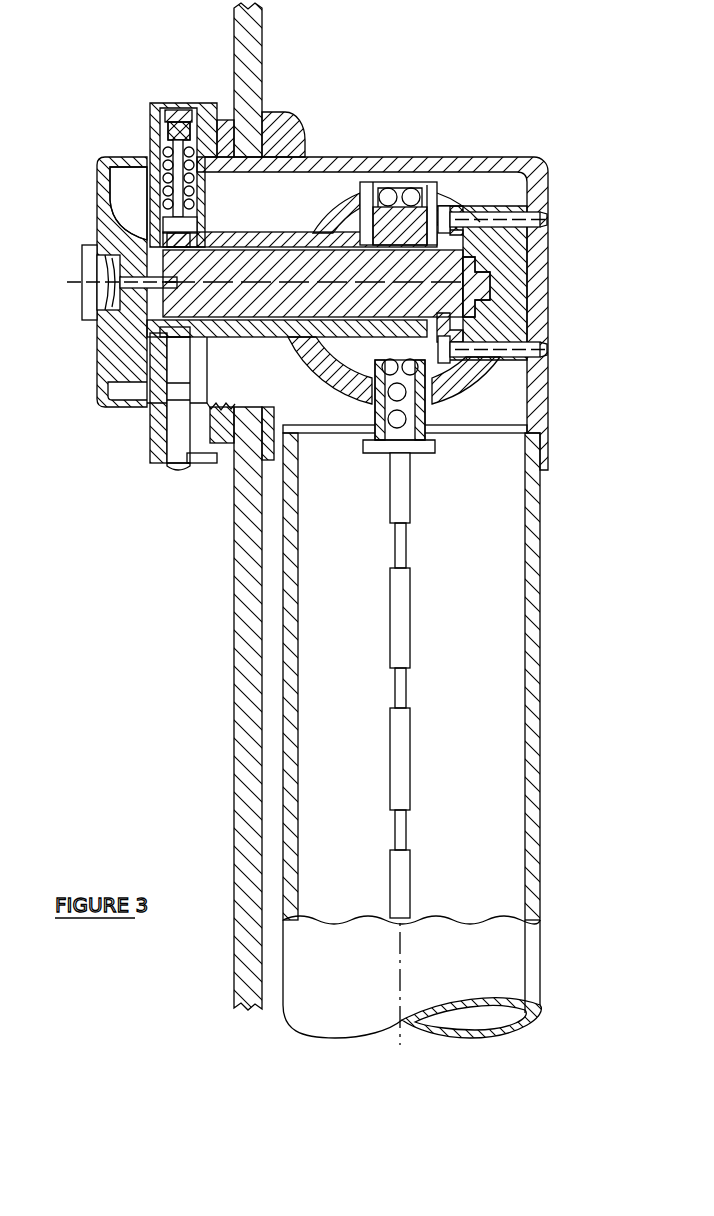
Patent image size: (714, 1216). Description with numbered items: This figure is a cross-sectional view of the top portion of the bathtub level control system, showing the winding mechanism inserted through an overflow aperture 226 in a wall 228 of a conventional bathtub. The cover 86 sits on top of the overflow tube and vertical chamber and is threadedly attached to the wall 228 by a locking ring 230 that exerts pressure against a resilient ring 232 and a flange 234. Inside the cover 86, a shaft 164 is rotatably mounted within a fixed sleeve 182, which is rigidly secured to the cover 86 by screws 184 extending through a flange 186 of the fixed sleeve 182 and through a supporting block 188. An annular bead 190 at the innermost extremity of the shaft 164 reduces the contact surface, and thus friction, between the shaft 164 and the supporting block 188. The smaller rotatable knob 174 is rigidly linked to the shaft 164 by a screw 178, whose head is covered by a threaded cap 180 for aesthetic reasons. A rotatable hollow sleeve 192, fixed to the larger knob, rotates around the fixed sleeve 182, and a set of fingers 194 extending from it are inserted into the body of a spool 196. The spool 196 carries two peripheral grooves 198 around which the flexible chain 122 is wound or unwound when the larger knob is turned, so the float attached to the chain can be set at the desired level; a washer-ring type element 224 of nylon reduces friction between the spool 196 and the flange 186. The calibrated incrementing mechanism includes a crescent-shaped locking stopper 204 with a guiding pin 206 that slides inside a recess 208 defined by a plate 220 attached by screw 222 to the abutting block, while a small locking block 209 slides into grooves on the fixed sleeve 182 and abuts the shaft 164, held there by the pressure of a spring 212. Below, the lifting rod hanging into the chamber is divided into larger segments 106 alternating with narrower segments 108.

The cover 86 is at (538, 165).
The larger segments 106 is at (408, 620).
The narrower segments 108 is at (405, 688).
The flexible chain 122 is at (385, 190).
The shaft 164 is at (263, 313).
The smaller rotatable knob 174 is at (98, 392).
The screw 178 is at (82, 288).
The threaded cap 180 is at (83, 248).
The fixed sleeve 182 is at (300, 236).
The screws 184 is at (548, 220).
The flange 186 is at (465, 332).
The supporting block 188 is at (522, 265).
The annular bead 190 is at (487, 300).
The rotatable hollow sleeve 192 is at (300, 338).
The fingers 194 is at (278, 322).
The spool 196 is at (362, 183).
The peripheral grooves 198 is at (404, 194).
The locking stopper 204 is at (197, 230).
The guiding pin 206 is at (178, 137).
The recess 208 is at (185, 118).
The locking block 209 is at (148, 236).
The spring 212 is at (196, 200).
The plate 220 is at (228, 117).
The screw 222 is at (170, 113).
The washer-ring type element 224 is at (438, 215).
The overflow aperture 226 is at (275, 412).
The wall 228 is at (236, 712).
The locking ring 230 is at (175, 440).
The resilient ring 232 is at (265, 112).
The flange 234 is at (288, 142).